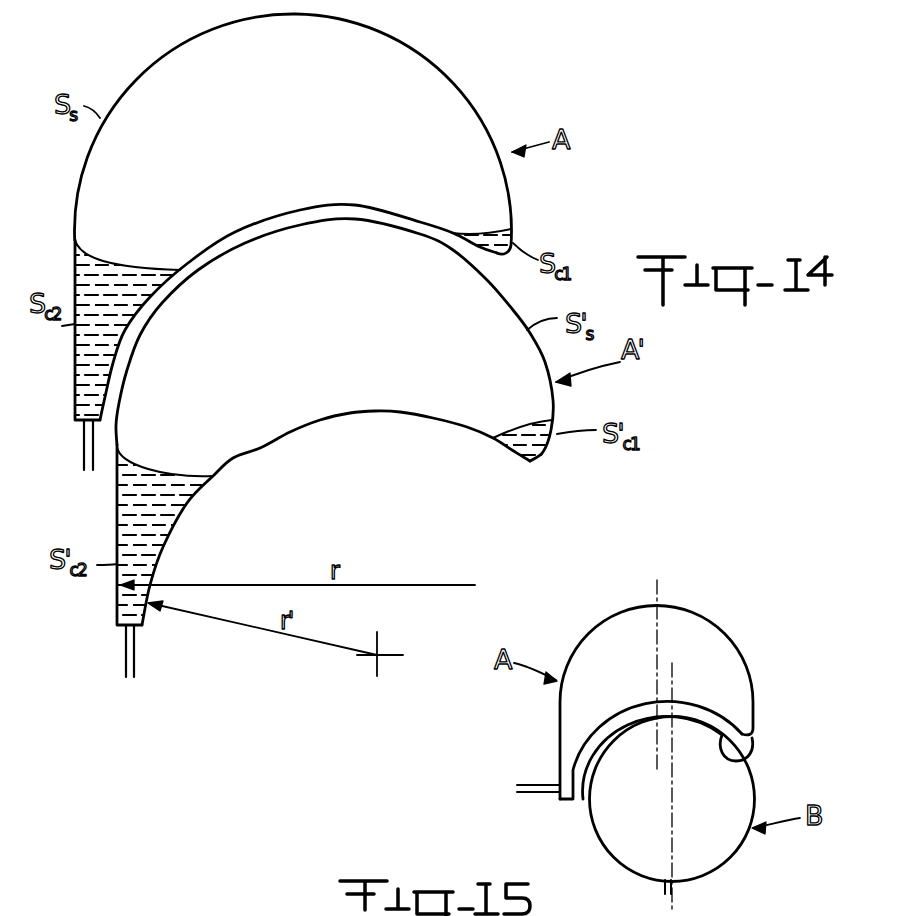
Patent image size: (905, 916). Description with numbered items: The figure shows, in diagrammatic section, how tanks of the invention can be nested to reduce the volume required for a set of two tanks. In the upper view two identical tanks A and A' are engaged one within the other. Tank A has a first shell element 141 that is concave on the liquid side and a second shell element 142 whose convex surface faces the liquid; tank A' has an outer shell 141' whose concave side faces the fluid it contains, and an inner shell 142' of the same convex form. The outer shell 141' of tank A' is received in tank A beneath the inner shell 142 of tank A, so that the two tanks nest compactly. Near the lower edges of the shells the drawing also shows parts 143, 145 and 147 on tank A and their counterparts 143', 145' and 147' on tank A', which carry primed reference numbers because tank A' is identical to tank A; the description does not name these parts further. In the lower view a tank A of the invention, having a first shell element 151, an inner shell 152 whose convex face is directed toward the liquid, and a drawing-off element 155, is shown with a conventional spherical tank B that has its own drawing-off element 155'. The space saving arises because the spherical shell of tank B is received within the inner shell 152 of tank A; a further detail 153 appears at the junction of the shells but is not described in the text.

In FIG. 14, the first shell element 141 is at (293, 134).
In FIG. 14, the second shell element 142 is at (298, 290).
In FIG. 14, the edge flange of body A 143 is at (57, 330).
In FIG. 14, the stem of body A 145 is at (53, 452).
In FIG. 14, the filler region of body A 147 is at (531, 225).
In FIG. 14, the outer shell 141' is at (366, 340).
In FIG. 14, the inner shell 142' is at (336, 518).
In FIG. 14, the edge flange of body A' 143' is at (87, 539).
In FIG. 14, the stem of body A' 145' is at (85, 656).
In FIG. 14, the filler region of body A' 147' is at (196, 536).
In FIG. 15, the first shell element 151 is at (711, 626).
In FIG. 15, the inner shell 152 is at (748, 762).
In FIG. 15, the step of body A 153 is at (570, 777).
In FIG. 15, the drawing-off element 155 is at (521, 825).
In FIG. 15, the drawing-off element 155' is at (718, 896).